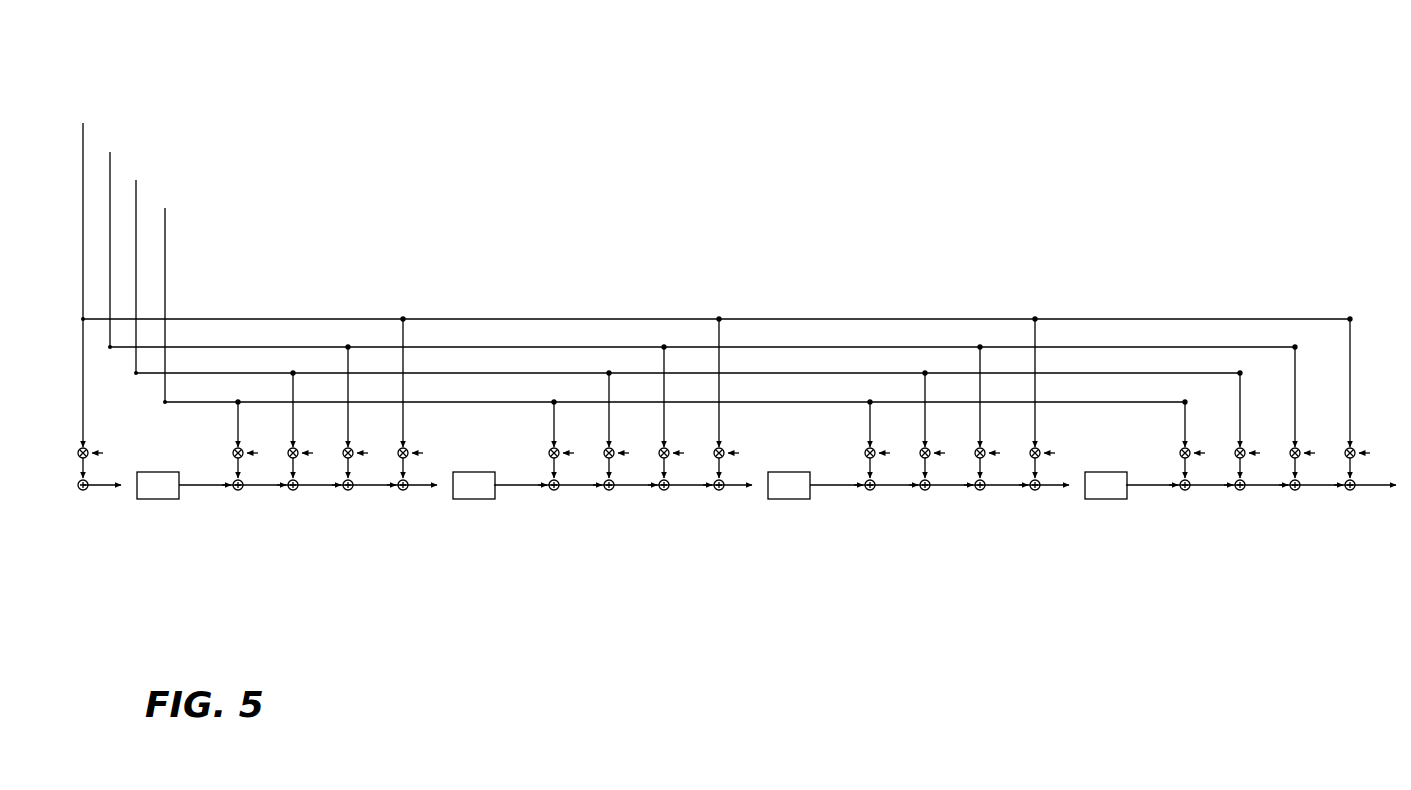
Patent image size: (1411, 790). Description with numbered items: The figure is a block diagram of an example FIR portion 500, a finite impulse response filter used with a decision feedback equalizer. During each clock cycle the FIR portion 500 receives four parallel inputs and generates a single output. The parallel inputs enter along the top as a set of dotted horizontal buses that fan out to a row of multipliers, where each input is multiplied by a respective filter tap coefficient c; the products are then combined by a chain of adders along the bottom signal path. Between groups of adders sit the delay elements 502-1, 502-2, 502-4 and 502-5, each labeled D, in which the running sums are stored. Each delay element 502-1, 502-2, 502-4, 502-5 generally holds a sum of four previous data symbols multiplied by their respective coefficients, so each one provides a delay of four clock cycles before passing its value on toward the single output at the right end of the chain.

The FIR portion 500 is at (1092, 58).
The delay element 502-1 is at (165, 499).
The delay element 502-2 is at (463, 499).
The delay element 502-4 is at (780, 499).
The delay element 502-5 is at (1100, 499).